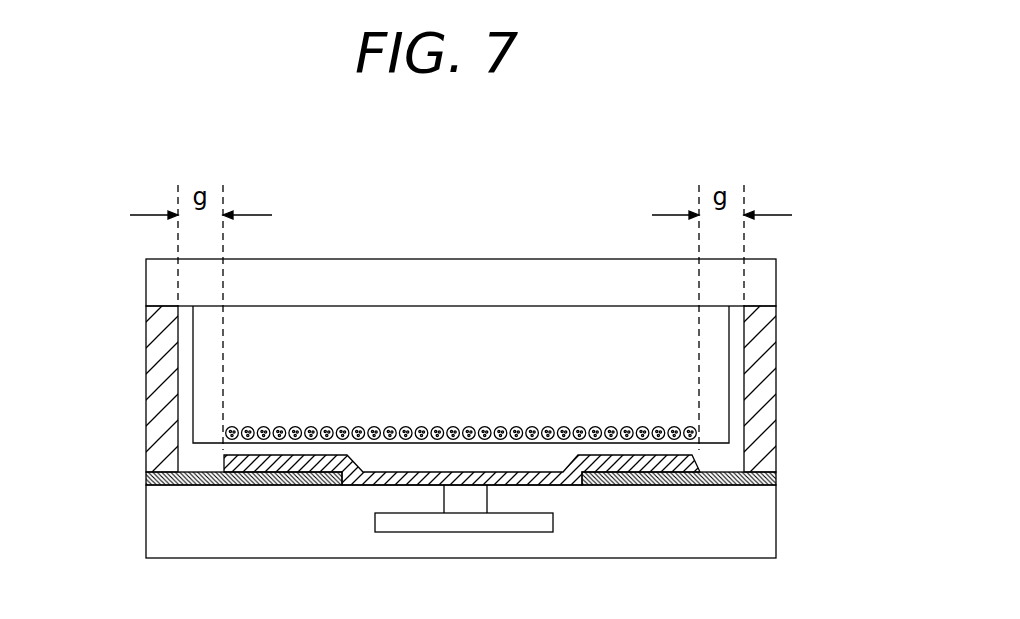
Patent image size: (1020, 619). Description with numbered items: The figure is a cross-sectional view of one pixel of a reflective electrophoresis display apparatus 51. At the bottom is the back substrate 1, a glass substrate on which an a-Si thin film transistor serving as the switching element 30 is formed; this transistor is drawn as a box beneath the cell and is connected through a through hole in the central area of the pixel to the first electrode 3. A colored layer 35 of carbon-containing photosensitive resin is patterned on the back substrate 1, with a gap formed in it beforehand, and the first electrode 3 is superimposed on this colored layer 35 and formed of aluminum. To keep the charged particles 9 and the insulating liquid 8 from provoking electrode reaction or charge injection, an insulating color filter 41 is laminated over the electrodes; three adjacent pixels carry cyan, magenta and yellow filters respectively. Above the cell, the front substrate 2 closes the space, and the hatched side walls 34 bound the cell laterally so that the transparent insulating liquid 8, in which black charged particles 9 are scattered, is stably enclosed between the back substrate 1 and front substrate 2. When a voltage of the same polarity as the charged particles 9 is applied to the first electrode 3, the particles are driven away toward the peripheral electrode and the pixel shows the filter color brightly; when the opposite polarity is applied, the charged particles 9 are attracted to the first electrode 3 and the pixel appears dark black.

The back substrate 1 is at (745, 548).
The front substrate 2 is at (760, 288).
The first electrode 3 is at (698, 463).
The insulating liquid 8 is at (490, 320).
The charged particles 9 is at (245, 428).
The switching element 30 is at (493, 520).
The side wall 34 is at (776, 366).
The colored layer 35 is at (290, 488).
The insulating color filter 41 is at (192, 453).
The reflective electrophoresis display apparatus 51 is at (620, 192).